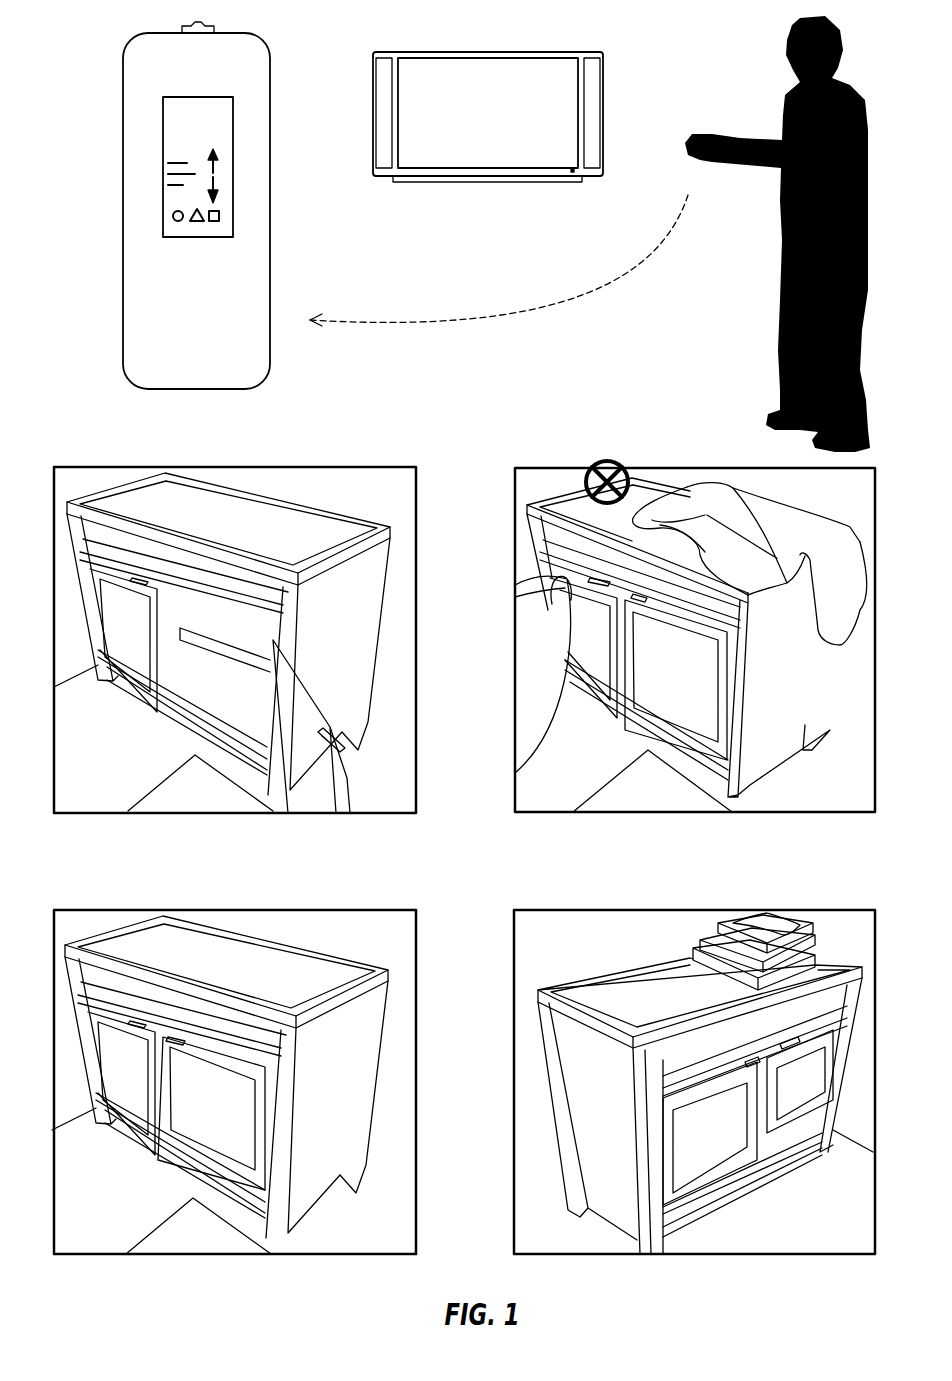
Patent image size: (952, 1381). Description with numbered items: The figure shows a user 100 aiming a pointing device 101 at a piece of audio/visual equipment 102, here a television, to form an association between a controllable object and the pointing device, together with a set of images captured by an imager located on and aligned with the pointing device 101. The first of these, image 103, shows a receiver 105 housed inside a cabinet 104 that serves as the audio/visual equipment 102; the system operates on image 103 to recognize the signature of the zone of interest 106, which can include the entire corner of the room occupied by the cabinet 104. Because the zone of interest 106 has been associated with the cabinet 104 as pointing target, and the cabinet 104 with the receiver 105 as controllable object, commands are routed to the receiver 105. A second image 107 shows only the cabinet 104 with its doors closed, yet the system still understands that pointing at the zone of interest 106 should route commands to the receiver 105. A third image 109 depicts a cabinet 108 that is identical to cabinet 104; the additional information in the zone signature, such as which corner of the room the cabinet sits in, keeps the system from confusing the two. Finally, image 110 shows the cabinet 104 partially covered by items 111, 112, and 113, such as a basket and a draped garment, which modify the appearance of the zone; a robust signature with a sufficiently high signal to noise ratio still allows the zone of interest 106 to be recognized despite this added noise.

The user 100 is at (778, 310).
The pointing device 101 is at (690, 136).
The audio/visual equipment 102 is at (373, 128).
The image 103 is at (220, 638).
The cabinet 104 is at (67, 527).
The receiver 105 is at (213, 660).
The zone of interest 106 is at (347, 475).
The image 107 is at (253, 1297).
The cabinet 108 is at (563, 1003).
The image 109 is at (665, 1107).
The image 110 is at (695, 659).
The item 111 is at (528, 618).
The item 112 is at (832, 569).
The item 113 is at (586, 479).